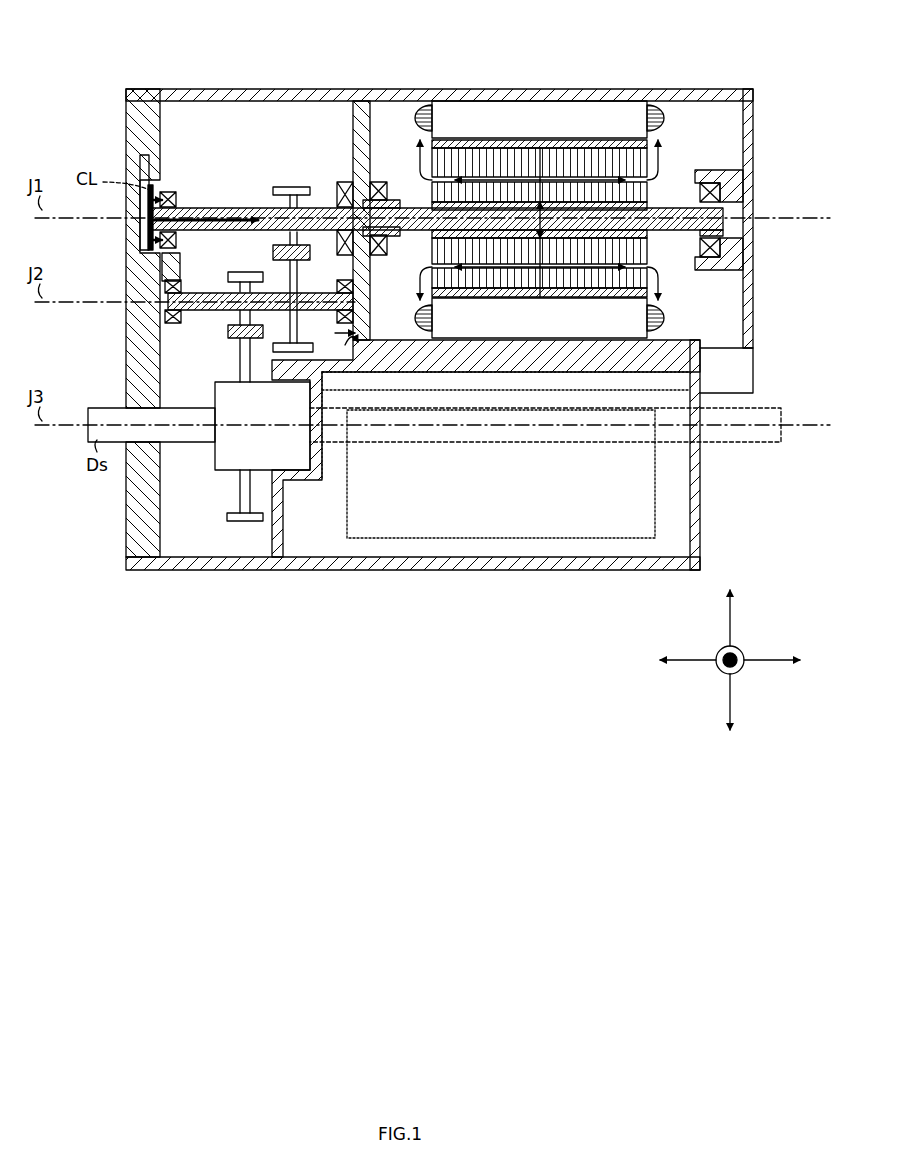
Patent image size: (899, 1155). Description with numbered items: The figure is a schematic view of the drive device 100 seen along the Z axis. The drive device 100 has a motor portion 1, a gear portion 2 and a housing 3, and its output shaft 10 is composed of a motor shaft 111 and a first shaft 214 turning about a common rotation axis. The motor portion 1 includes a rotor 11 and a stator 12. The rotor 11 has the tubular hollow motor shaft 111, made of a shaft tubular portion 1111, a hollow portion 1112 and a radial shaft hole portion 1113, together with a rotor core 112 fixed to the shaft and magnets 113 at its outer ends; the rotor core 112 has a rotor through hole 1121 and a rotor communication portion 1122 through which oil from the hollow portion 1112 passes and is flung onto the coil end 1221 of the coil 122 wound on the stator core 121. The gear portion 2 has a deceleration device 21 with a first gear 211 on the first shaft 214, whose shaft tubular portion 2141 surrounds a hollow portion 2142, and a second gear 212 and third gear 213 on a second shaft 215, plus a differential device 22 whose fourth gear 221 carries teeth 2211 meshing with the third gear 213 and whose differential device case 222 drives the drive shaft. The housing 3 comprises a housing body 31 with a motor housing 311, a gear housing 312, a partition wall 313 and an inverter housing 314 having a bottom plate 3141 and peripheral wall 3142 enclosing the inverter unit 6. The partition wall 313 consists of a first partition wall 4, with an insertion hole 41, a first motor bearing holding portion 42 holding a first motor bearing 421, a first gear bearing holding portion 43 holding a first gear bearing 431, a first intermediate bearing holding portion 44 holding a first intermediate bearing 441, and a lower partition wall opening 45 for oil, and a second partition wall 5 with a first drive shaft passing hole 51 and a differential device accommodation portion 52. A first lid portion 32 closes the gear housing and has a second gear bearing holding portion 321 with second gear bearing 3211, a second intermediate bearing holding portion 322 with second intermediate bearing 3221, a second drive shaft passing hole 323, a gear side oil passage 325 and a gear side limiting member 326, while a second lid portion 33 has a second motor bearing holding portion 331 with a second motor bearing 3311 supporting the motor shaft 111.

The drive device 100 is at (110, 75).
The motor portion 1 is at (686, 160).
The output shaft 10 is at (700, 130).
The rotor 11 is at (565, 160).
The motor shaft 111 is at (483, 186).
The shaft tubular portion 1111 is at (725, 210).
The hollow portion 1112 is at (722, 230).
The shaft hole portion 1113 is at (498, 148).
The rotor core 112 is at (462, 165).
The rotor through hole 1121 is at (546, 165).
The rotor communication portion 1122 is at (513, 170).
The magnet 113 is at (493, 160).
The stator 12 is at (625, 110).
The stator core 121 is at (584, 165).
The coil 122 is at (656, 115).
The coil end 1221 is at (662, 118).
The gear portion 2 is at (256, 150).
The deceleration device 21 is at (268, 165).
The first gear 211 is at (273, 250).
The second gear 212 is at (273, 262).
The third gear 213 is at (235, 280).
The first shaft 214 is at (205, 205).
The shaft tubular portion 2141 is at (178, 205).
The hollow portion 2142 is at (236, 207).
The second shaft 215 is at (205, 320).
The differential device 22 is at (215, 480).
The fourth gear 221 is at (228, 517).
The teeth 2211 is at (245, 521).
The differential device case 222 is at (215, 455).
The housing 3 is at (345, 85).
The housing body 31 is at (388, 95).
The motor housing 311 is at (443, 96).
The gear housing 312 is at (268, 96).
The partition wall 313 is at (443, 372).
The inverter housing 314 is at (700, 478).
The bottom plate 3141 is at (690, 498).
The peripheral wall 3142 is at (698, 514).
The first lid portion 32 is at (126, 112).
The second gear bearing holding portion 321 is at (163, 270).
The second gear bearing 3211 is at (162, 258).
The second intermediate bearing holding portion 322 is at (165, 325).
The second intermediate bearing 3221 is at (163, 288).
The second drive shaft passing hole 323 is at (140, 397).
The gear side oil passage 325 is at (142, 162).
The gear side limiting member 326 is at (148, 212).
The second lid portion 33 is at (757, 108).
The second motor bearing holding portion 331 is at (740, 170).
The second motor bearing 3311 is at (722, 192).
The first partition wall 4 is at (372, 350).
The insertion hole 41 is at (348, 170).
The first motor bearing holding portion 42 is at (381, 180).
The first motor bearing 421 is at (395, 200).
The first gear bearing holding portion 43 is at (338, 185).
The first gear bearing 431 is at (335, 195).
The first intermediate bearing holding portion 44 is at (340, 318).
The first intermediate bearing 441 is at (326, 277).
The partition wall opening 45 is at (345, 348).
The second partition wall 5 is at (318, 400).
The first drive shaft passing hole 51 is at (325, 458).
The differential device accommodation portion 52 is at (306, 482).
The inverter unit 6 is at (658, 462).